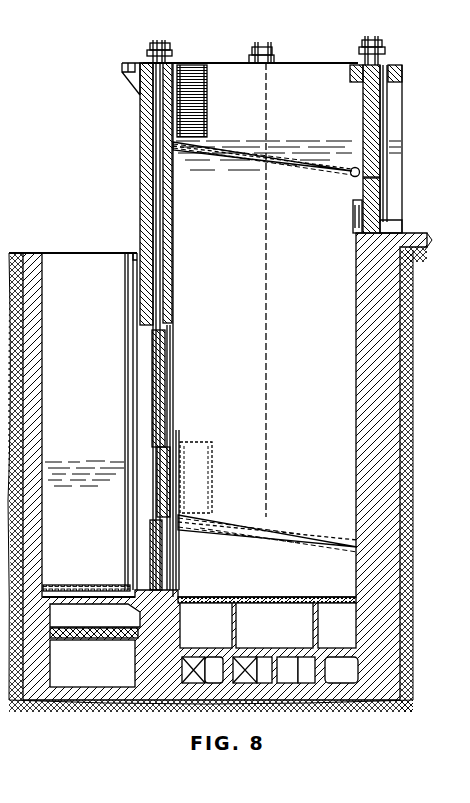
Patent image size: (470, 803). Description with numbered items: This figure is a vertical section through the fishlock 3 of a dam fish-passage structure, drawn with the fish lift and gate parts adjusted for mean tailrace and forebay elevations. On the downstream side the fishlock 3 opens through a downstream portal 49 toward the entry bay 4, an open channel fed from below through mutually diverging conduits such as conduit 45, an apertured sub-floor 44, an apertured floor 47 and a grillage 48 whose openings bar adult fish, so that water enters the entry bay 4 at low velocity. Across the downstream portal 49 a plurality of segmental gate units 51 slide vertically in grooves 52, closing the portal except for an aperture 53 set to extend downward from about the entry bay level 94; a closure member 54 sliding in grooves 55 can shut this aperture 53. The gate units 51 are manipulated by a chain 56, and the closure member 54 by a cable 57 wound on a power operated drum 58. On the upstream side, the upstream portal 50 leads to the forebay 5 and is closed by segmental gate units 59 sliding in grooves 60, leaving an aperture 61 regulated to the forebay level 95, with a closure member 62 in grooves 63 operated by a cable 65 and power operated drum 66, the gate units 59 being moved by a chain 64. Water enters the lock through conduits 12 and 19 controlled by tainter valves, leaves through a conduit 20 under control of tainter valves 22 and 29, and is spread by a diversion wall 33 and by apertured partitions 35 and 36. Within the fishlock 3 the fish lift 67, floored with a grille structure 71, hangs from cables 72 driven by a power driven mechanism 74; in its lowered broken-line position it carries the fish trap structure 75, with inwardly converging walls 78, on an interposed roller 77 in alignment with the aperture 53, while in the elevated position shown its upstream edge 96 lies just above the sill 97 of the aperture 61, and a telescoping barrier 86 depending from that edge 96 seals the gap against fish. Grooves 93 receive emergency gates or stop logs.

The fishlock 3 is at (249, 299).
The entry bay 4 is at (84, 488).
The forebay 5 is at (295, 160).
The conduit 12 is at (341, 670).
The conduit 19 is at (300, 660).
The conduit 20 is at (216, 662).
The tainter valve 22 is at (194, 660).
The tainter valve 29 is at (243, 660).
The diversion wall 33 is at (265, 660).
The apertured partition 35 is at (292, 626).
The apertured partition 36 is at (272, 598).
The apertured sub-floor 44 is at (87, 630).
The conduit 45 is at (92, 663).
The apertured floor 47 is at (82, 605).
The grillage 48 is at (70, 585).
The downstream portal 49 is at (140, 402).
The upstream portal 50 is at (385, 185).
The segmental gate unit 51 is at (155, 366).
The groove 52 is at (147, 186).
The aperture 53 is at (158, 455).
The closure member 54 is at (181, 486).
The groove 55 is at (178, 570).
The chain 56 is at (152, 143).
The cable 57 is at (172, 246).
The power operated drum 58 is at (166, 43).
The segmental gate unit 59 is at (364, 96).
The groove 60 is at (364, 116).
The aperture 61 is at (362, 136).
The closure member 62 is at (386, 110).
The groove 63 is at (387, 206).
The chain 64 is at (352, 70).
The cable 65 is at (393, 65).
The power operated drum 66 is at (370, 42).
The fish lift 67 is at (281, 170).
The grille structure 71 is at (312, 152).
The cable 72 is at (267, 85).
The power driven mechanism 74 is at (263, 45).
The fish trap structure 75 is at (200, 96).
The roller 77 is at (196, 156).
The inwardly converging walls 78 is at (200, 118).
The barrier 86 is at (356, 222).
The groove 93 is at (135, 253).
The entry bay level 94 is at (75, 460).
The forebay level 95 is at (423, 132).
The edge 96 is at (352, 178).
The sill 97 is at (362, 198).